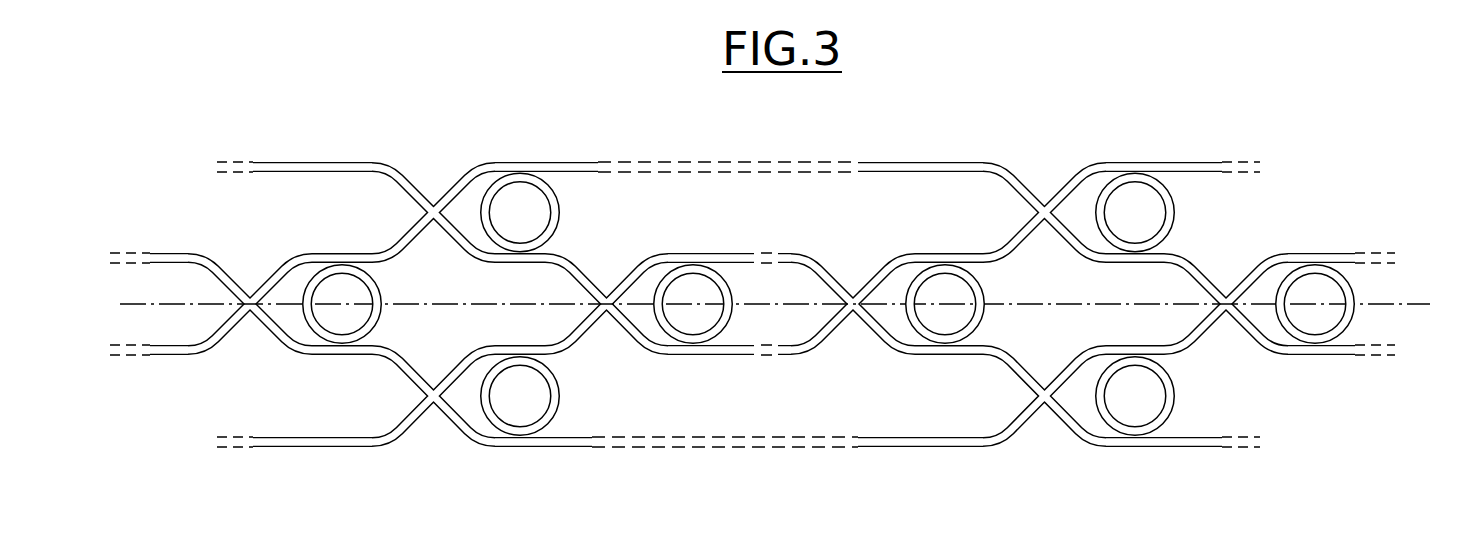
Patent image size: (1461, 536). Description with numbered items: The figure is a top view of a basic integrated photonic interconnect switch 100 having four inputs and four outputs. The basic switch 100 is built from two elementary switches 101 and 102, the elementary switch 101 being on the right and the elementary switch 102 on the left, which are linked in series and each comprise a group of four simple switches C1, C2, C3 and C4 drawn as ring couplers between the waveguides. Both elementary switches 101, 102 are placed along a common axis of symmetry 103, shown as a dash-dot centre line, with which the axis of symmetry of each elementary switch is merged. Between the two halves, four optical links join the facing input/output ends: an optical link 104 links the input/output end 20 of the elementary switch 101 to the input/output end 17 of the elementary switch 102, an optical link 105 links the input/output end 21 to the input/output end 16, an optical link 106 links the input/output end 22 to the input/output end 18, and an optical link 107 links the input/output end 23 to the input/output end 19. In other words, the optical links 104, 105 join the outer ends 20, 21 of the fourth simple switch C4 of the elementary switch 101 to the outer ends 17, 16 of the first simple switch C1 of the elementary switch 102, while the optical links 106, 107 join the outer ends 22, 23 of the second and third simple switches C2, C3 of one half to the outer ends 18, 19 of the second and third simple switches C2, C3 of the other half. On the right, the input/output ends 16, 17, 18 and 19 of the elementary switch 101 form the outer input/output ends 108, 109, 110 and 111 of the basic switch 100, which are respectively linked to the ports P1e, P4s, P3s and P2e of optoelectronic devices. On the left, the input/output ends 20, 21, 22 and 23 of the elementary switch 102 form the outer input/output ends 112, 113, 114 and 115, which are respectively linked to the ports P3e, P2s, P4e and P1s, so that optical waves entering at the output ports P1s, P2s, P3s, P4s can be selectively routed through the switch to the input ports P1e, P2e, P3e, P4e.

The basic switch 100 is at (752, 227).
The elementary switch 101 is at (1035, 122).
The elementary switch 102 is at (455, 122).
The axis of symmetry 103 is at (1375, 302).
The optical link 104 is at (755, 356).
The optical link 105 is at (756, 252).
The optical link 106 is at (725, 448).
The optical link 107 is at (723, 160).
The outer input/output end 108 is at (1369, 252).
The outer input/output end 109 is at (1369, 357).
The outer input/output end 110 is at (1235, 449).
The outer input/output end 111 is at (1236, 160).
The outer input/output end 112 is at (129, 356).
The outer input/output end 113 is at (129, 252).
The outer input/output end 114 is at (238, 448).
The outer input/output end 115 is at (238, 160).
The input/output end 16 is at (697, 252).
The input/output end 17 is at (696, 356).
The input/output end 18 is at (547, 448).
The input/output end 19 is at (547, 160).
The input/output end 20 is at (176, 356).
The input/output end 21 is at (176, 252).
The input/output end 22 is at (301, 448).
The input/output end 23 is at (301, 160).
The first simple switch C1 is at (657, 250).
The second simple switch C2 is at (497, 455).
The third simple switch C3 is at (497, 158).
The fourth simple switch C4 is at (345, 250).
The output port P1s is at (206, 166).
The output port P2s is at (98, 257).
The input port P3e is at (107, 351).
The input port P4e is at (215, 443).
The input port P2e is at (1294, 166).
The input port P1e is at (1426, 259).
The output port P4s is at (1435, 351).
The output port P3s is at (1303, 442).